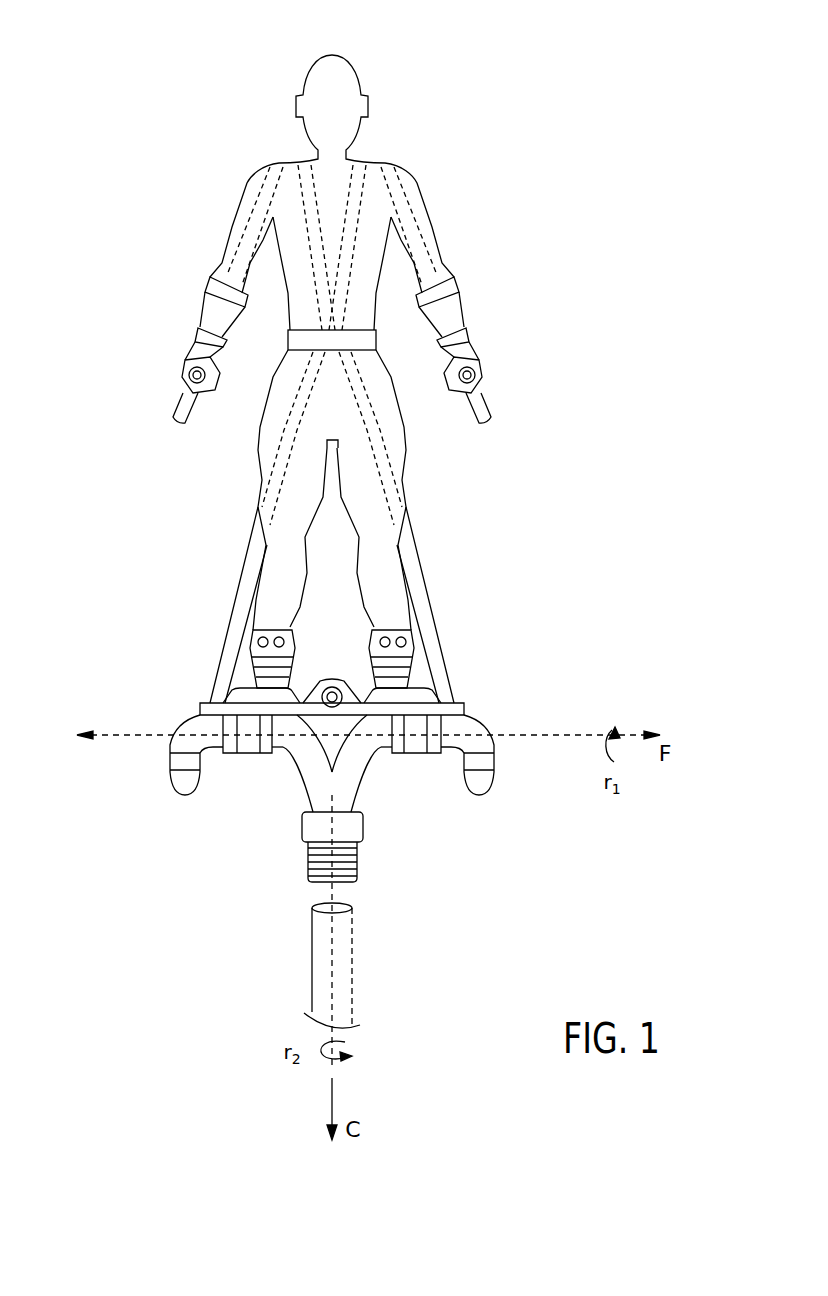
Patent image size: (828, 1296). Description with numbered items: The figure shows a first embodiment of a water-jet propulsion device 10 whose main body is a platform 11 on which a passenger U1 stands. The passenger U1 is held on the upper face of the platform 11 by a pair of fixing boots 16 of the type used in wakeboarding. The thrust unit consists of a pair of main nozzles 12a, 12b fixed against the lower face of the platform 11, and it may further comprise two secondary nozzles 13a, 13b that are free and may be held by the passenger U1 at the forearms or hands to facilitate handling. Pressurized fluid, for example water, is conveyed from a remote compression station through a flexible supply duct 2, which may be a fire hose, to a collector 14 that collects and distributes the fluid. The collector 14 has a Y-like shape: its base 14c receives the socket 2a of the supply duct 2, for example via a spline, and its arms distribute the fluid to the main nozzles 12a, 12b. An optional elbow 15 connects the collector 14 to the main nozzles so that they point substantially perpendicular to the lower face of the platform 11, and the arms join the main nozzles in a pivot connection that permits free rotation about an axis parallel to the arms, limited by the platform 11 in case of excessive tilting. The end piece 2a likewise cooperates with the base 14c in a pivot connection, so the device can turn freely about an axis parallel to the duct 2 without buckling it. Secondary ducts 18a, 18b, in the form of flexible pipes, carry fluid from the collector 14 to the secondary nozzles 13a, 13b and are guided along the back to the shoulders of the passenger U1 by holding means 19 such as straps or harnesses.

The passenger U1 is at (352, 68).
The secondary duct 18a is at (277, 165).
The secondary duct 18b is at (393, 165).
The holding means 19 is at (363, 342).
The secondary nozzle 13a is at (172, 408).
The secondary nozzle 13b is at (487, 408).
The fixing boots 16 is at (283, 670).
The propulsion device 10 is at (334, 793).
The platform 11 is at (453, 713).
The elbow 15 is at (192, 725).
The main nozzle 12a is at (178, 781).
The main nozzle 12b is at (492, 787).
The collector 14 is at (342, 783).
The base 14c is at (363, 835).
The supply duct 2 is at (360, 955).
The socket 2a is at (350, 907).